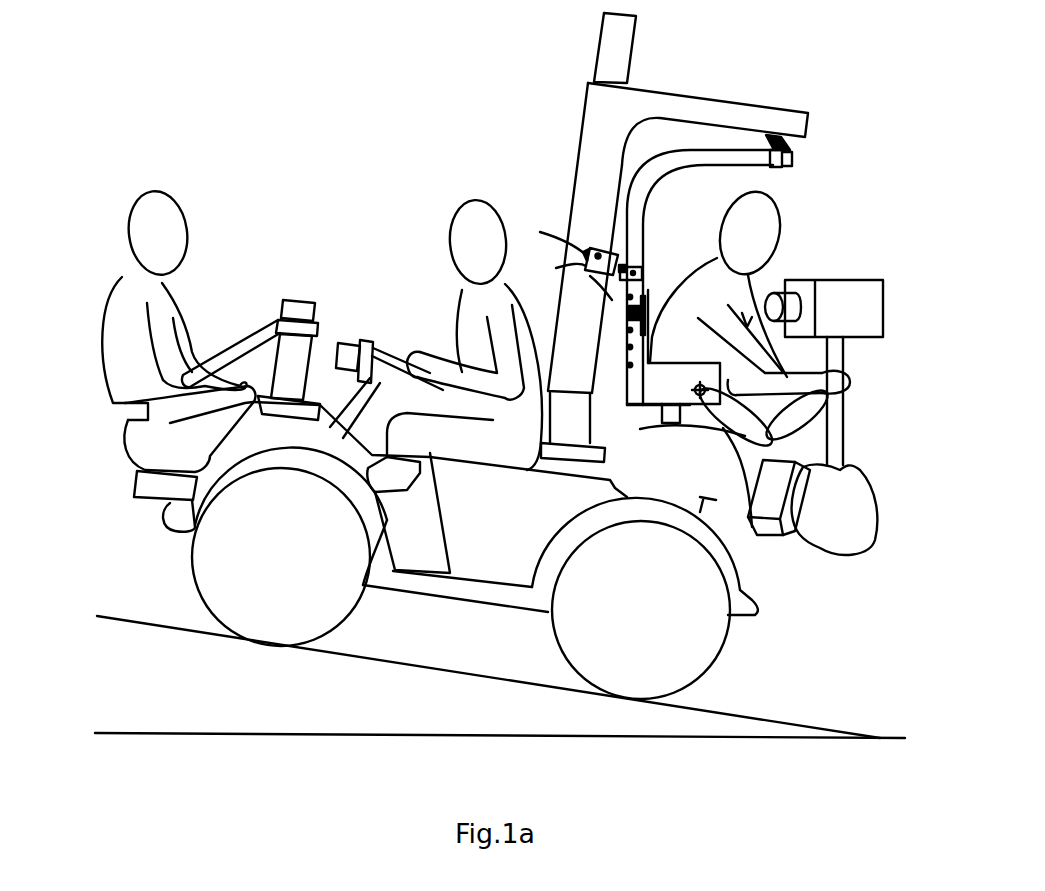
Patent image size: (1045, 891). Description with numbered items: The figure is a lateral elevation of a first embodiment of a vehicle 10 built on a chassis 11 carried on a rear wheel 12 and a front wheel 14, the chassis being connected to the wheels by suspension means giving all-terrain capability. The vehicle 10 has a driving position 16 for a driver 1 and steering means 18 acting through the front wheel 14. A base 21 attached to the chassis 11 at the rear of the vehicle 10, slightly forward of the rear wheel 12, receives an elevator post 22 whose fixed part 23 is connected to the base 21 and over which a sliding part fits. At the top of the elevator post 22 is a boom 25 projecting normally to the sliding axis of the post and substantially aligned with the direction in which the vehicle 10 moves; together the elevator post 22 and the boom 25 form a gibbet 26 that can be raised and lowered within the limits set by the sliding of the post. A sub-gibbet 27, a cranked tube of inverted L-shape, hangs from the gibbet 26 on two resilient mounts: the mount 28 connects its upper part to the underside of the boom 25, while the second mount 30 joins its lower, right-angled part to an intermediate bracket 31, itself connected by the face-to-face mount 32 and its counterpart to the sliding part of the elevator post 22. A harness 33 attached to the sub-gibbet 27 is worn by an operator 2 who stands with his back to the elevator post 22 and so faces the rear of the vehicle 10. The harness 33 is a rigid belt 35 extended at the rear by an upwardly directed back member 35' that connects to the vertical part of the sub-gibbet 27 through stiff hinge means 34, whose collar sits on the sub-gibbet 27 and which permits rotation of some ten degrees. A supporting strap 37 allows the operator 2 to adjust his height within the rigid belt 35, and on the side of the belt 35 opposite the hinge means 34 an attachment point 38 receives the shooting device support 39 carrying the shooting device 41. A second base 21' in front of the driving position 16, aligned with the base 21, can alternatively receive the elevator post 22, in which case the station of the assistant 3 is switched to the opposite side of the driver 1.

The driver 1 is at (501, 311).
The operator 2 is at (717, 306).
The assistant 3 is at (141, 304).
The vehicle 10 is at (414, 652).
The chassis 11 is at (470, 590).
The rear wheel 12 is at (650, 615).
The front wheel 14 is at (291, 569).
The driving position 16 is at (416, 345).
The steering means 18 is at (364, 350).
The base 21 is at (586, 427).
The second base 21' is at (251, 356).
The elevator post 22 is at (597, 125).
The fixed part 23 is at (612, 58).
The boom 25 is at (720, 112).
The gibbet 26 is at (616, 167).
The sub-gibbet 27 is at (641, 190).
The SILENTBLOC mount 28 is at (790, 143).
The SILENTBLOC mount 30 is at (585, 268).
The intermediate bracket 31 is at (585, 254).
The SILENTBLOC mount 32 is at (598, 252).
The harness 33 is at (635, 355).
The hinge means 34 is at (645, 270).
The rigid belt 35 is at (673, 383).
The back member 35' is at (679, 294).
The supporting strap 37 is at (660, 428).
The attachment point 38 is at (702, 392).
The shooting device support 39 is at (808, 410).
The shooting device 41 is at (855, 320).